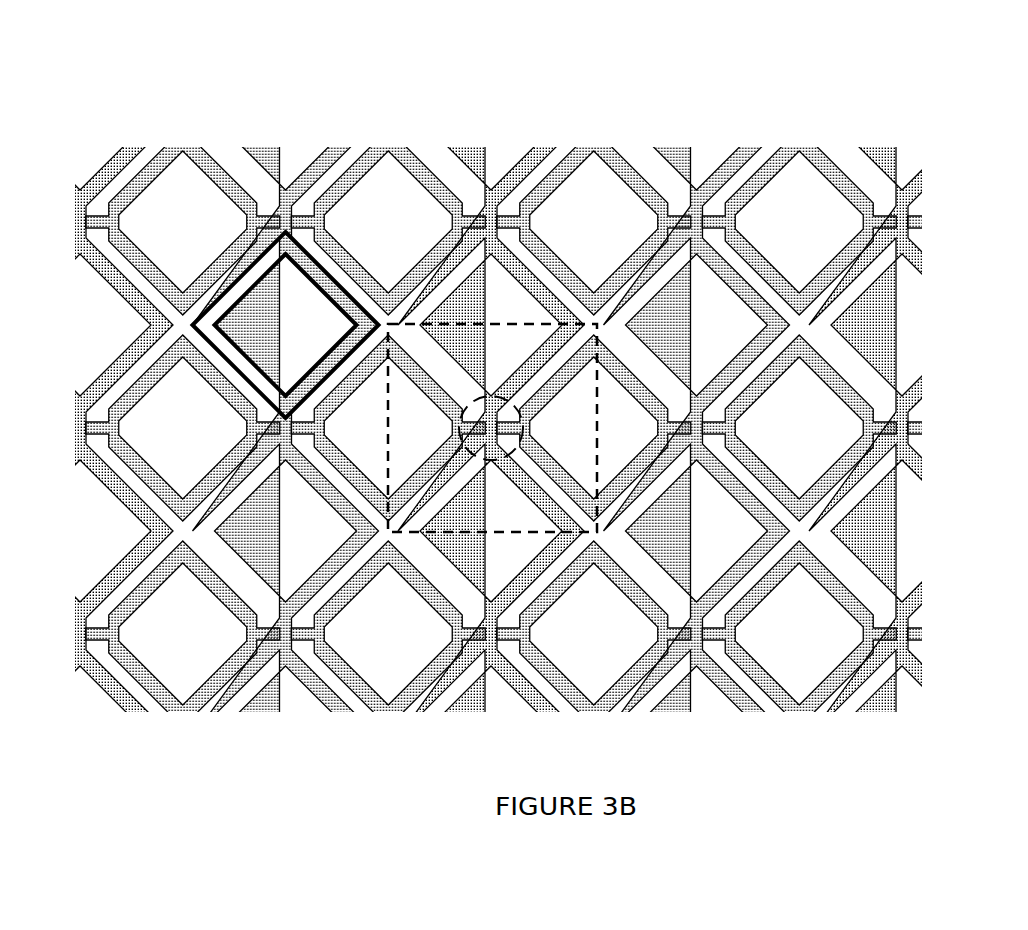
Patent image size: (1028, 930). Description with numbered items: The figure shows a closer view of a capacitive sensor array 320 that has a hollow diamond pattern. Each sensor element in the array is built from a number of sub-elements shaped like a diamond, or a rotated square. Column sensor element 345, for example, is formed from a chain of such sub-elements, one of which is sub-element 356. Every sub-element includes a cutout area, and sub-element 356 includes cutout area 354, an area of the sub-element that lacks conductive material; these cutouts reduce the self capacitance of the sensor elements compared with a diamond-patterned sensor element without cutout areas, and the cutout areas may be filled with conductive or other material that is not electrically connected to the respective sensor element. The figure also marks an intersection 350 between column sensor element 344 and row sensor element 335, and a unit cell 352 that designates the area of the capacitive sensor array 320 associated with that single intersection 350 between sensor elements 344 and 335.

The capacitive sensor array 320 is at (514, 426).
The row sensor element 335 is at (924, 430).
The column sensor element 344 is at (503, 155).
The column sensor element 345 is at (287, 155).
The intersection 350 is at (522, 444).
The unit cell 352 is at (602, 362).
The cutout area 354 is at (237, 297).
The sub-element 356 is at (215, 353).